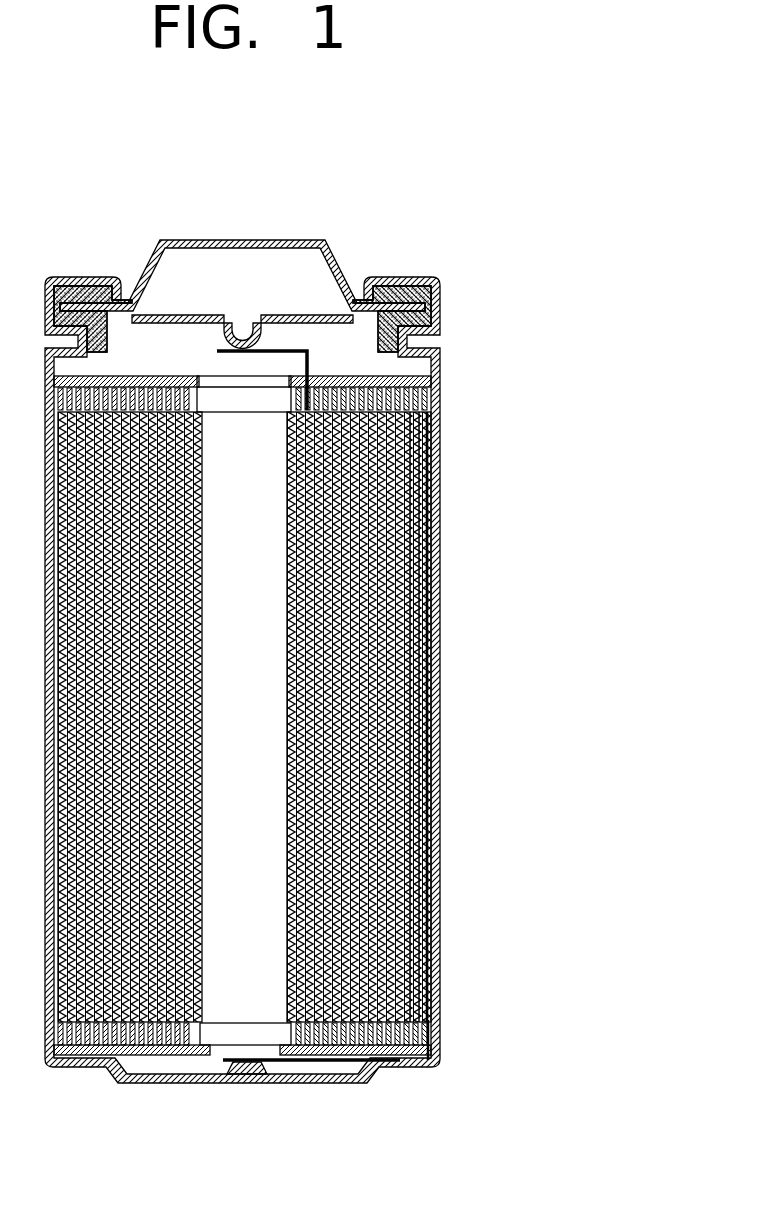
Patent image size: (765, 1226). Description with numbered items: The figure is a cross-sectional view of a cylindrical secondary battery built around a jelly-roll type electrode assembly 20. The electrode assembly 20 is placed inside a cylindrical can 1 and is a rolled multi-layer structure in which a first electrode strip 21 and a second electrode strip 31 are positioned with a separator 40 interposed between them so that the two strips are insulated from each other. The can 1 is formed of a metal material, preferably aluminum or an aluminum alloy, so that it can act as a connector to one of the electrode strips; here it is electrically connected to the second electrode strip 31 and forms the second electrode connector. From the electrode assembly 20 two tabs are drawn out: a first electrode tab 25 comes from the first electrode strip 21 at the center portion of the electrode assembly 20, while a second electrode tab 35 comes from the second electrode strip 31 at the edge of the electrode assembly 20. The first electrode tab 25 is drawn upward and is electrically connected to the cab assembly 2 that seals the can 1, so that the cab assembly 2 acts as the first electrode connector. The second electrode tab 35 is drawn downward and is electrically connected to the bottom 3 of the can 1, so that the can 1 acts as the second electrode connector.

The cylindrical can 1 is at (440, 358).
The cab assembly 2 is at (336, 234).
The bottom of the can 3 is at (242, 1080).
The electrode assembly 20 is at (309, 716).
The first electrode strip 21 is at (411, 848).
The first electrode tab 25 is at (217, 351).
The second electrode strip 31 is at (433, 761).
The second electrode tab 35 is at (322, 1062).
The separator 40 is at (421, 808).